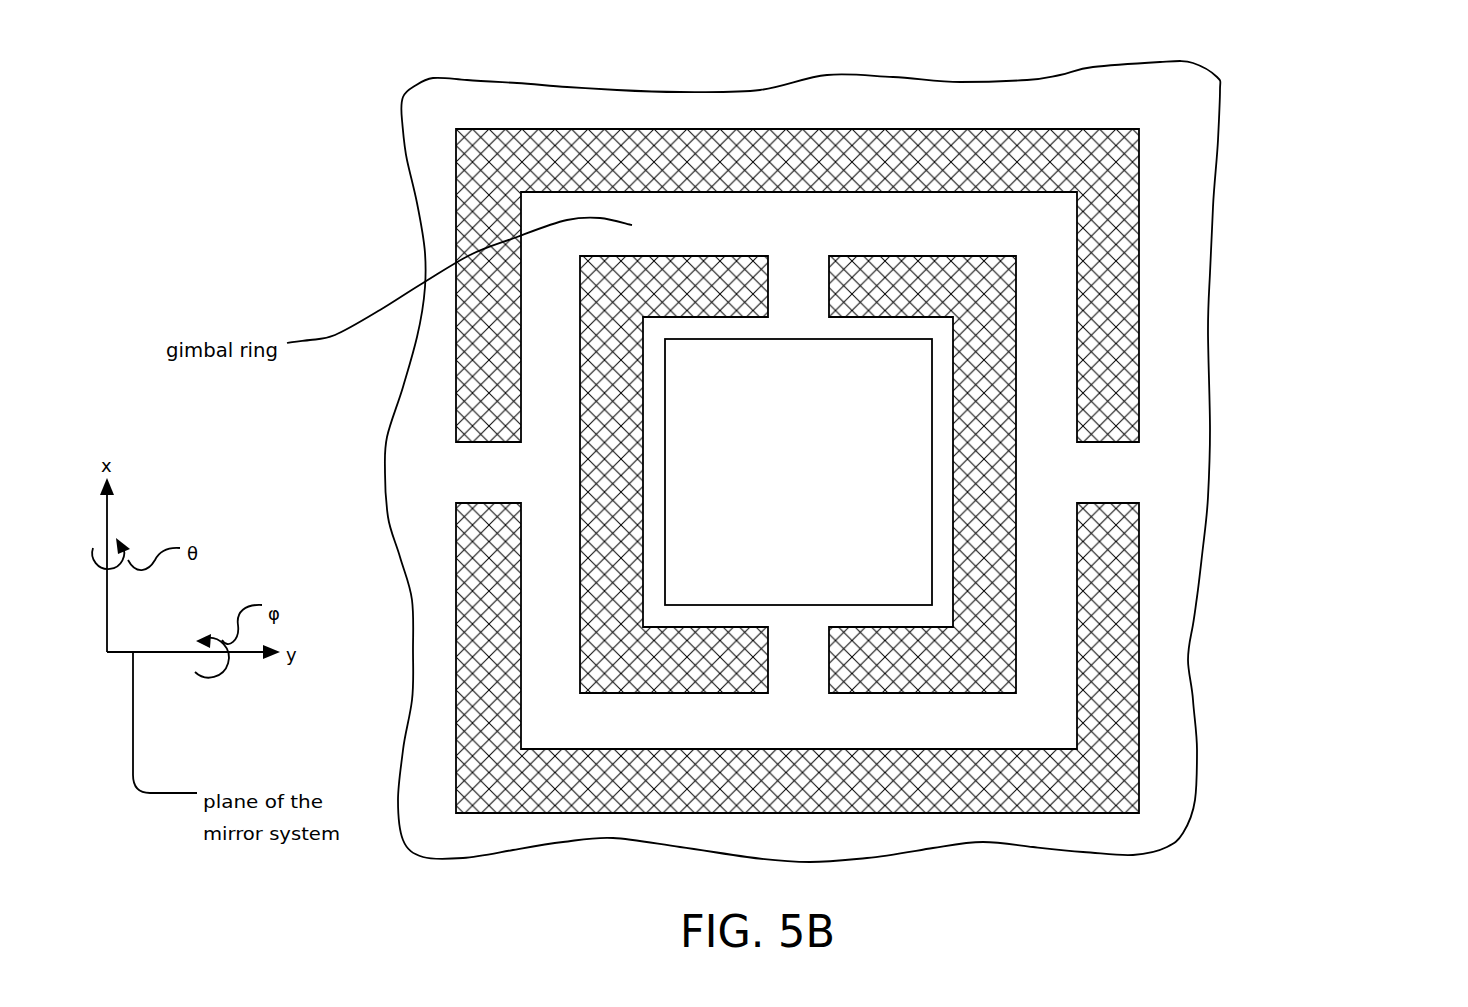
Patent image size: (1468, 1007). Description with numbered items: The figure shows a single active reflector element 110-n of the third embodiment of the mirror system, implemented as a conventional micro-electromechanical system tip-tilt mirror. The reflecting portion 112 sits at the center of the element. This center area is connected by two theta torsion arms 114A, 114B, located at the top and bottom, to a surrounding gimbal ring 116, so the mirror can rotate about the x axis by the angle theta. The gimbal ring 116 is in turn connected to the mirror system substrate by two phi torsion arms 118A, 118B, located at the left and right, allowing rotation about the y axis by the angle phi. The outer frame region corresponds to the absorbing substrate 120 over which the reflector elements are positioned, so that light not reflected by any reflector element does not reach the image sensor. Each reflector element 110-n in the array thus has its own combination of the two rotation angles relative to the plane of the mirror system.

The reflector element 110-n is at (1153, 383).
The mirror 112 is at (932, 562).
The θ torsion arm 114A is at (799, 288).
The θ torsion arm 114B is at (797, 662).
The gimbal ring 116 is at (1043, 643).
The φ torsion arm 118A is at (492, 474).
The φ torsion arm 118B is at (1107, 470).
The absorbing substrate 120 is at (1100, 278).